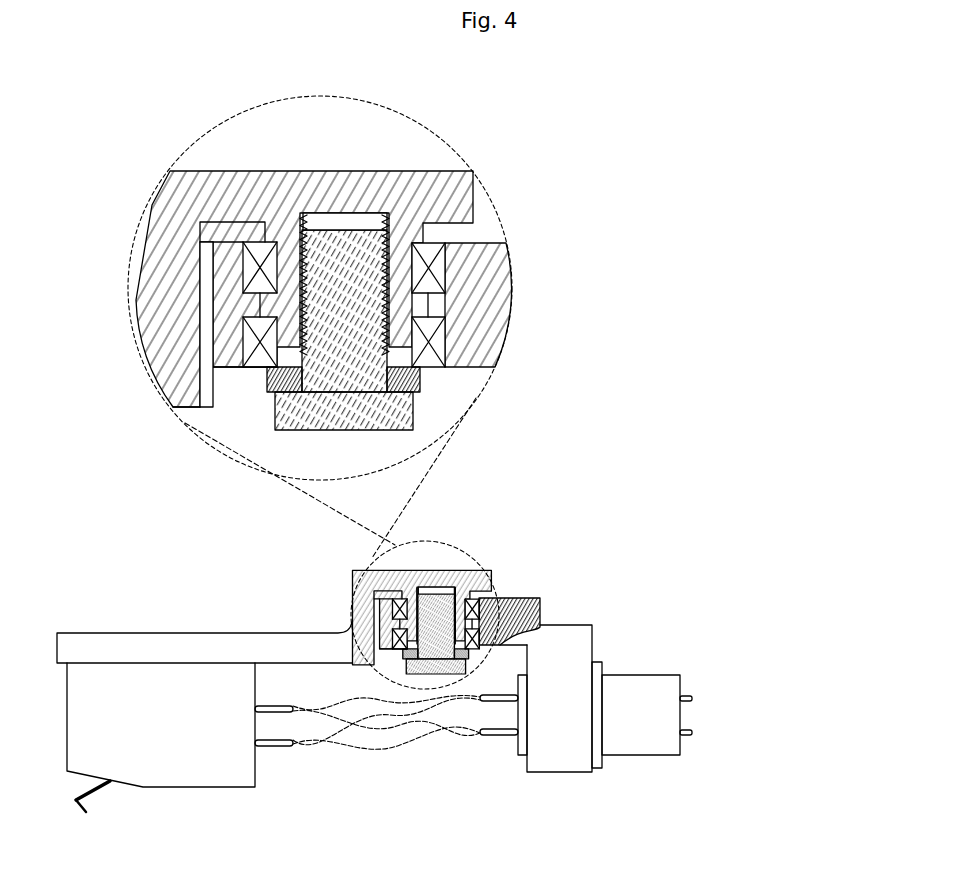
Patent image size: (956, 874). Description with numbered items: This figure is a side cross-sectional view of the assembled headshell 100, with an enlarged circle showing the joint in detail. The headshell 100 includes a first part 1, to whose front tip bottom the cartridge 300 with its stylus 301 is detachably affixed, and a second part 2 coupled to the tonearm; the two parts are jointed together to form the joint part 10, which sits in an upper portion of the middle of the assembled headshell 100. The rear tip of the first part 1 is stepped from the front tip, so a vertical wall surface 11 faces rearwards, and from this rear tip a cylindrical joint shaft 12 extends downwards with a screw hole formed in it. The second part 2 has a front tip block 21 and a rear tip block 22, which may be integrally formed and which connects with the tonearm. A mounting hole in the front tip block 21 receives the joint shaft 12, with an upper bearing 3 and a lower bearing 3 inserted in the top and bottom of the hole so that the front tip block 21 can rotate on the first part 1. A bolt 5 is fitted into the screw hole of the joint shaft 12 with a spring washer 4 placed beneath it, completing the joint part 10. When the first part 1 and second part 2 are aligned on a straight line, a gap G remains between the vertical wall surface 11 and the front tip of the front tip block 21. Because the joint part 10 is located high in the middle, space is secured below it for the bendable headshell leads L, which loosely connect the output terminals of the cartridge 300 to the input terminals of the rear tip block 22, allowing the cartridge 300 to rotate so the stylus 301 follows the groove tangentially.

The first part 1 is at (180, 204).
The bearing 3 is at (450, 334).
The front tip block 21 is at (222, 226).
The gap G is at (205, 290).
The joint shaft 12 is at (385, 212).
The bolt 5 is at (305, 432).
The spring washer 4 is at (283, 378).
The vertical wall surface 11 is at (185, 423).
The headshell 100 is at (614, 404).
The joint part 10 is at (445, 577).
The second part 2 is at (600, 618).
The rear tip block 22 is at (553, 757).
The headshell leads L is at (400, 753).
The cartridge 300 is at (200, 768).
The stylus 301 is at (90, 802).